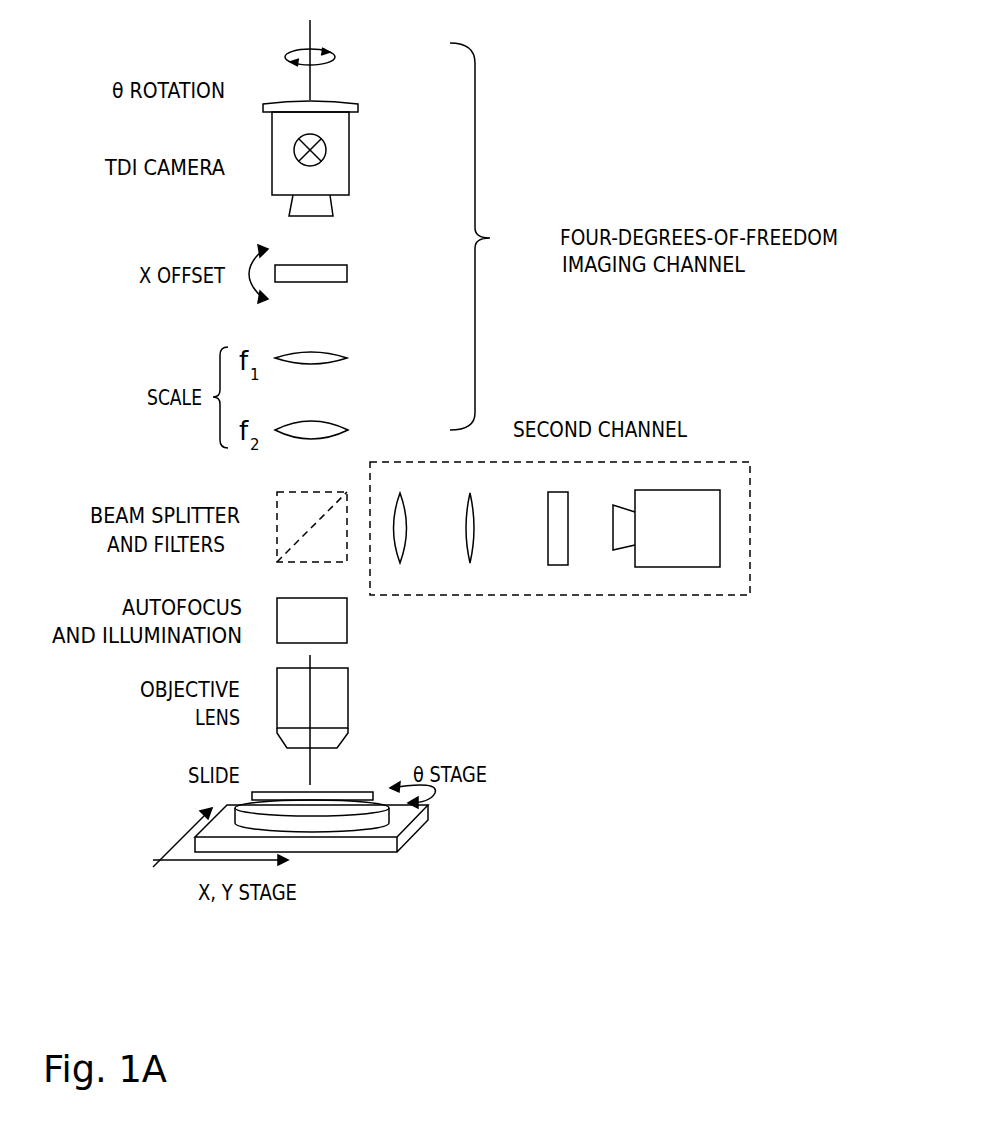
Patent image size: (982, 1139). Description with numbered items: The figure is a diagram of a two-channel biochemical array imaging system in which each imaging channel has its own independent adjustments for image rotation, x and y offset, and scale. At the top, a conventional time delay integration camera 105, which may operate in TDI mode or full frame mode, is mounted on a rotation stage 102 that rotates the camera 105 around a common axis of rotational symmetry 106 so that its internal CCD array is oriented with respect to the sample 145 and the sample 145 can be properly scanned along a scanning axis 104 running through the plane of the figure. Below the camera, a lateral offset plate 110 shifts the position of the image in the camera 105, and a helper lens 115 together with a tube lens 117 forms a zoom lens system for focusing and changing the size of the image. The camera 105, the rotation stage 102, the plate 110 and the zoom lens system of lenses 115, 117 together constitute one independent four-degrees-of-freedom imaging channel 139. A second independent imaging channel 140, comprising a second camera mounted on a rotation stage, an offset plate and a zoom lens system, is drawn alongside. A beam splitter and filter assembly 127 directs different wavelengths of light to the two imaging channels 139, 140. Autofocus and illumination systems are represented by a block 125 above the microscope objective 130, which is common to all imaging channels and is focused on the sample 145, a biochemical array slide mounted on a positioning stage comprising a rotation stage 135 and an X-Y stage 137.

The rotation stage 102 is at (363, 107).
The scanning axis 104 is at (328, 145).
The TDI camera 105 is at (352, 163).
The common axis of rotational symmetry 106 is at (313, 32).
The lateral offset plate 110 is at (353, 270).
The helper lens 115 is at (353, 357).
The tube lens 117 is at (348, 428).
The autofocus and illumination systems 125 is at (350, 637).
The beam splitter and filter assembly 127 is at (275, 495).
The microscope objective 130 is at (348, 708).
The rotation stage 135 is at (370, 818).
The X-Y stage 137 is at (362, 848).
The independent imaging channel 139 is at (490, 238).
The second independent imaging channel 140 is at (747, 455).
The sample 145 is at (355, 788).